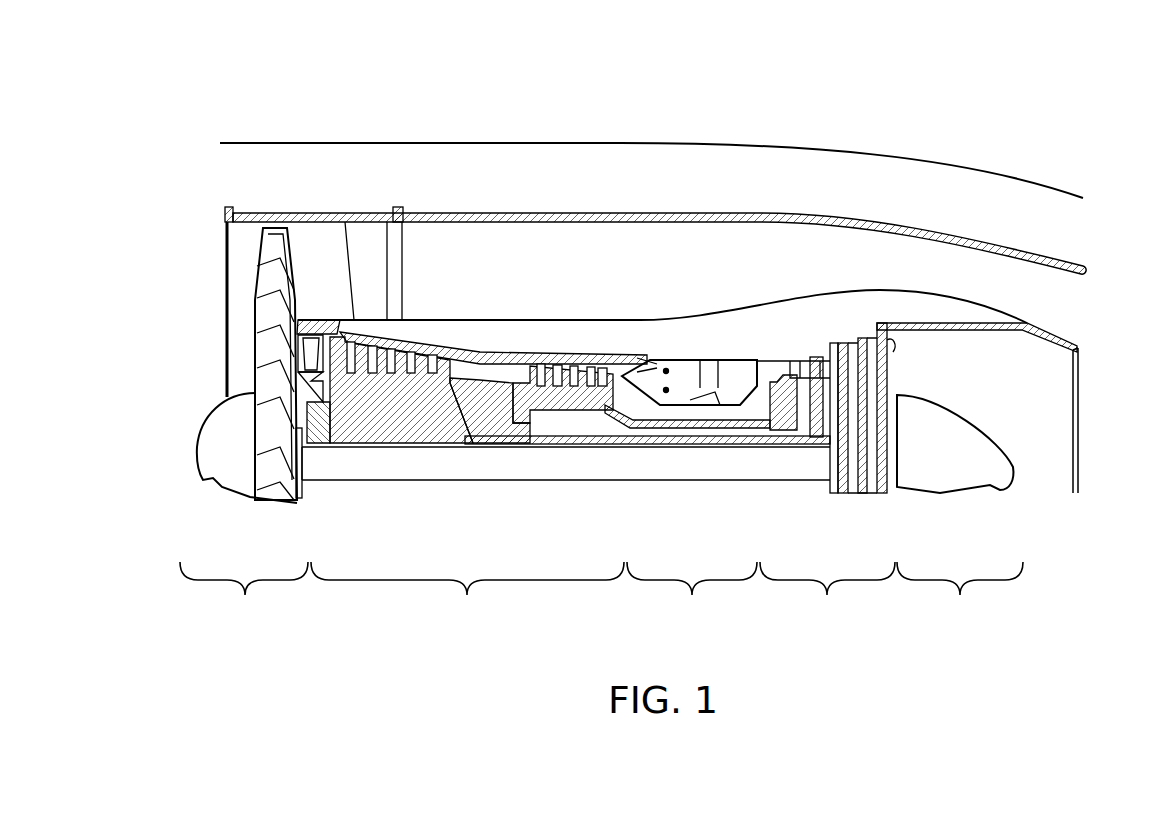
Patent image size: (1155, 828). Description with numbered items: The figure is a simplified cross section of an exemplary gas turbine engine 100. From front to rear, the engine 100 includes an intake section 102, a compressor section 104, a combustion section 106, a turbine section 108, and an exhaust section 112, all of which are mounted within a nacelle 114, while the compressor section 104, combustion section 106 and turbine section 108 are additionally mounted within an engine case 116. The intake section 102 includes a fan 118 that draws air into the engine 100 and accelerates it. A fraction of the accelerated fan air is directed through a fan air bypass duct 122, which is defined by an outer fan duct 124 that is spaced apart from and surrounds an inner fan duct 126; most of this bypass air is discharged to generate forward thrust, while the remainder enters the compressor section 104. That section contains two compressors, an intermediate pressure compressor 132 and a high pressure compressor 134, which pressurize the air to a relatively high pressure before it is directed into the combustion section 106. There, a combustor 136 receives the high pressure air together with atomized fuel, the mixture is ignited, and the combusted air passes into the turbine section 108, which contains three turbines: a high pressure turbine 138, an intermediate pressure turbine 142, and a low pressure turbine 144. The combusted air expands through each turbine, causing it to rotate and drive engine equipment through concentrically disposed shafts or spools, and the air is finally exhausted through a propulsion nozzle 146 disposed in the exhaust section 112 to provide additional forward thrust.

The gas turbine engine 100 is at (436, 122).
The intake section 102 is at (244, 595).
The compressor section 104 is at (467, 595).
The combustion section 106 is at (692, 595).
The turbine section 108 is at (827, 595).
The exhaust section 112 is at (960, 595).
The nacelle 114 is at (943, 162).
The engine case 116 is at (317, 327).
The fan 118 is at (263, 318).
The fan air bypass duct 122 is at (488, 284).
The outer fan duct 124 is at (323, 213).
The inner fan duct 126 is at (647, 320).
The intermediate pressure compressor 132 is at (406, 432).
The high pressure compressor 134 is at (577, 402).
The combustor 136 is at (740, 360).
The high pressure turbine 138 is at (777, 382).
The intermediate pressure turbine 142 is at (833, 357).
The low pressure turbine 144 is at (876, 348).
The propulsion nozzle 146 is at (1058, 410).